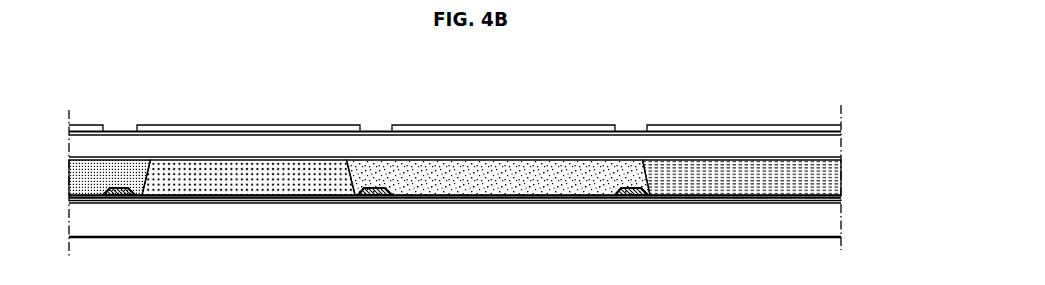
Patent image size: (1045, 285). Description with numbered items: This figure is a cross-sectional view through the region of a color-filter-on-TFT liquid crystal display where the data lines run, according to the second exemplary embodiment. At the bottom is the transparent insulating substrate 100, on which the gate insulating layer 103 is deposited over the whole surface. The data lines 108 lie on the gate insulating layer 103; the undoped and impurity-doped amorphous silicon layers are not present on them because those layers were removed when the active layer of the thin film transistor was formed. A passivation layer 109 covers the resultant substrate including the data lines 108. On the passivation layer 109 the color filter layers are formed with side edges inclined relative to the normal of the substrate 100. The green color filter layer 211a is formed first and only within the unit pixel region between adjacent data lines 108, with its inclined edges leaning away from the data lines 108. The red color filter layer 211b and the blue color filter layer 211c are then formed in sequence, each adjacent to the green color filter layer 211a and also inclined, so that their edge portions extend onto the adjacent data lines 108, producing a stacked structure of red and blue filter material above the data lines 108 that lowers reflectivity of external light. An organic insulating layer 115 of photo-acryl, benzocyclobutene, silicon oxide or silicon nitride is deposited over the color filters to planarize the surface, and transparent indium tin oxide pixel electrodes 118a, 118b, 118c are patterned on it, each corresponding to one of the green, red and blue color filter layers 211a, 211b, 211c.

The transparent insulating substrate 100 is at (836, 218).
The gate insulating layer 103 is at (841, 199).
The data lines 108 is at (122, 198).
The passivation layer 109 is at (841, 192).
The organic insulating layer 115 is at (836, 139).
The pixel electrode 118a is at (243, 125).
The pixel electrode 118b is at (506, 125).
The pixel electrode 118c is at (733, 125).
The green color filter layer 211a is at (267, 190).
The red color filter layer 211b is at (525, 190).
The blue color filter layer 211c is at (97, 170).